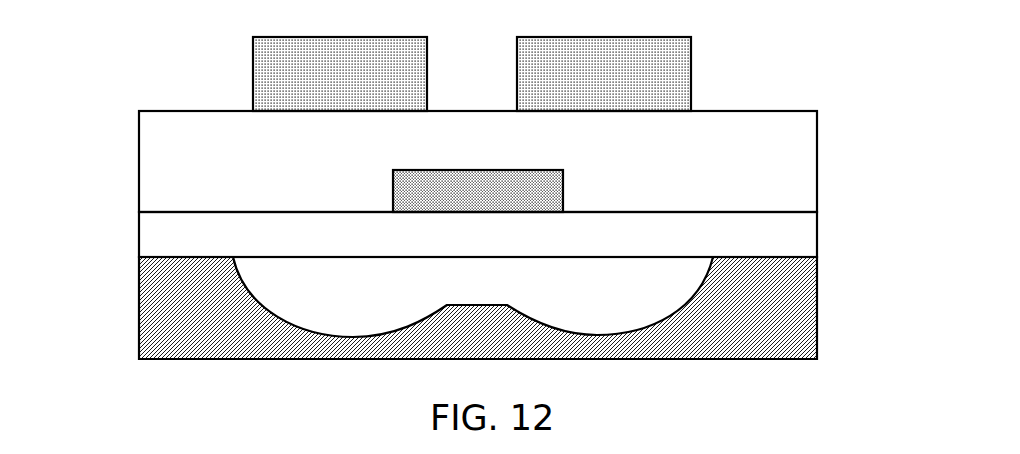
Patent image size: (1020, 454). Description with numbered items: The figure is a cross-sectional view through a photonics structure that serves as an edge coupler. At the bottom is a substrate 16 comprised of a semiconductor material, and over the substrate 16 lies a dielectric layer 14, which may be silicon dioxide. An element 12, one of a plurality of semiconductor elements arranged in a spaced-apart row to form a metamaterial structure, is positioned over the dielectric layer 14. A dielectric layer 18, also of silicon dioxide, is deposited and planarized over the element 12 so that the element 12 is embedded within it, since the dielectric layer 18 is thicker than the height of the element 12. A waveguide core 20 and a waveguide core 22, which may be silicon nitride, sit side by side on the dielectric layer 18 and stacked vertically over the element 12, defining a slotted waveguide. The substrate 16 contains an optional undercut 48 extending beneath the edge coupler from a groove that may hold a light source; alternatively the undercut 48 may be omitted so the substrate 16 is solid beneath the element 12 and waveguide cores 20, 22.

The element 12 is at (535, 192).
The dielectric layer 14 is at (770, 236).
The substrate 16 is at (172, 310).
The dielectric layer 18 is at (166, 170).
The waveguide core 20 is at (303, 70).
The waveguide core 22 is at (648, 70).
The undercut 48 is at (492, 293).